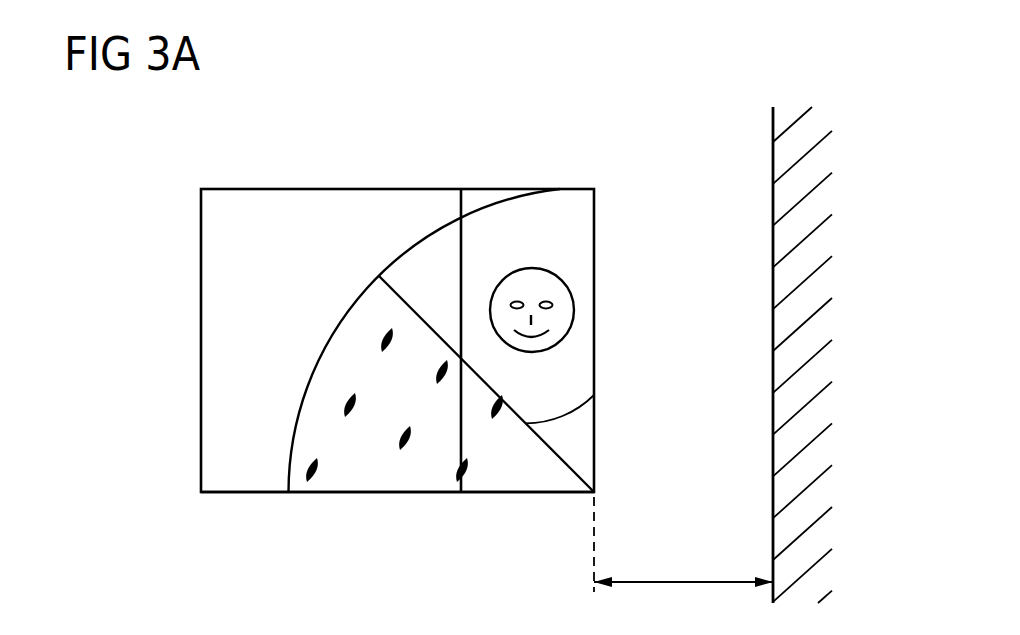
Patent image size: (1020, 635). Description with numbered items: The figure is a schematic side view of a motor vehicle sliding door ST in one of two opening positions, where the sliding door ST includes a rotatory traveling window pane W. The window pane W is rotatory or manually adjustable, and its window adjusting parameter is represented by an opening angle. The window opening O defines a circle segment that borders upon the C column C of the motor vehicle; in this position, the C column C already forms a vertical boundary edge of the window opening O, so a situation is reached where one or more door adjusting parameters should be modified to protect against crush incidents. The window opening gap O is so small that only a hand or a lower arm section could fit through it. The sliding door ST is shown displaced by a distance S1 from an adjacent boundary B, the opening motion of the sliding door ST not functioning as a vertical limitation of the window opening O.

The window opening O is at (565, 245).
The C column C is at (457, 272).
The window pane W is at (408, 463).
The sliding door ST is at (335, 493).
The distance to wall S1 is at (683, 544).
The wall B is at (773, 163).